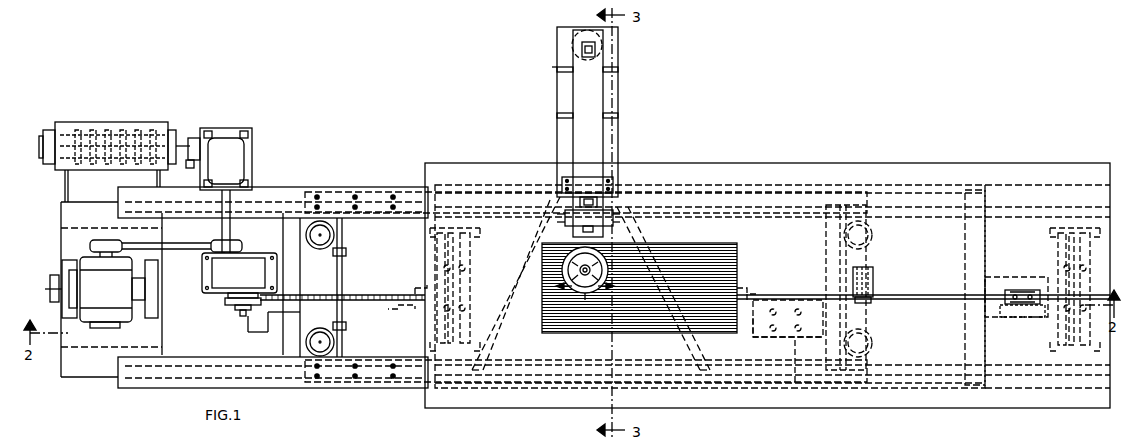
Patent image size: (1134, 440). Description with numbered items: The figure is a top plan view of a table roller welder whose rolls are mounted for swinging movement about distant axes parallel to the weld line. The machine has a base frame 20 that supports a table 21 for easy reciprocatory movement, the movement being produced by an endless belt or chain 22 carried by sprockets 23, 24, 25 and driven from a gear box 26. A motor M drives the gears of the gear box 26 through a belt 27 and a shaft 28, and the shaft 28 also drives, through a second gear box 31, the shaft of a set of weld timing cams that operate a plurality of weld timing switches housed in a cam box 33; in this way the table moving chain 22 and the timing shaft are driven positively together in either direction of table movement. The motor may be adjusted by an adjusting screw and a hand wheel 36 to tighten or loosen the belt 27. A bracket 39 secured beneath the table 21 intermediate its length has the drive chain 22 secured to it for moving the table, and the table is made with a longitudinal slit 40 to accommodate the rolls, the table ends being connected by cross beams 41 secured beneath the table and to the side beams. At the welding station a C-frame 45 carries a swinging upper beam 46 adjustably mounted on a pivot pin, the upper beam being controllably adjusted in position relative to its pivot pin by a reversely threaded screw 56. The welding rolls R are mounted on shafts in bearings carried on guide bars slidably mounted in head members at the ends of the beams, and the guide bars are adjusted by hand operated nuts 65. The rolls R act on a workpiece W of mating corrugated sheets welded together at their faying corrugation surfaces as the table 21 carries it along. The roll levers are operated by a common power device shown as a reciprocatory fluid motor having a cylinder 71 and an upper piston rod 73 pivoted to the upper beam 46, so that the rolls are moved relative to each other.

The base frame 20 is at (352, 383).
The table 21 is at (992, 405).
The endless belt or chain 22 is at (376, 302).
The sprocket 23 is at (236, 306).
The sprocket 24 is at (1000, 318).
The sprocket 25 is at (868, 300).
The gear box 26 is at (240, 279).
The belt 27 is at (130, 243).
The shaft 28 is at (228, 200).
The gear box 31 is at (232, 152).
The cam box 33 is at (135, 122).
The hand wheel 36 is at (50, 282).
The bracket 39 is at (780, 346).
The longitudinal slit 40 is at (905, 286).
The cross beam 41 is at (470, 262).
The C-frame 45 is at (618, 97).
The upper swinging beam 46 is at (595, 83).
The reversely threaded screw 56 is at (600, 203).
The hand operated nut 65 is at (612, 258).
The cylinder 71 is at (587, 30).
The upper piston rod 73 is at (598, 47).
The workpiece W is at (738, 255).
The welding roll R is at (560, 292).